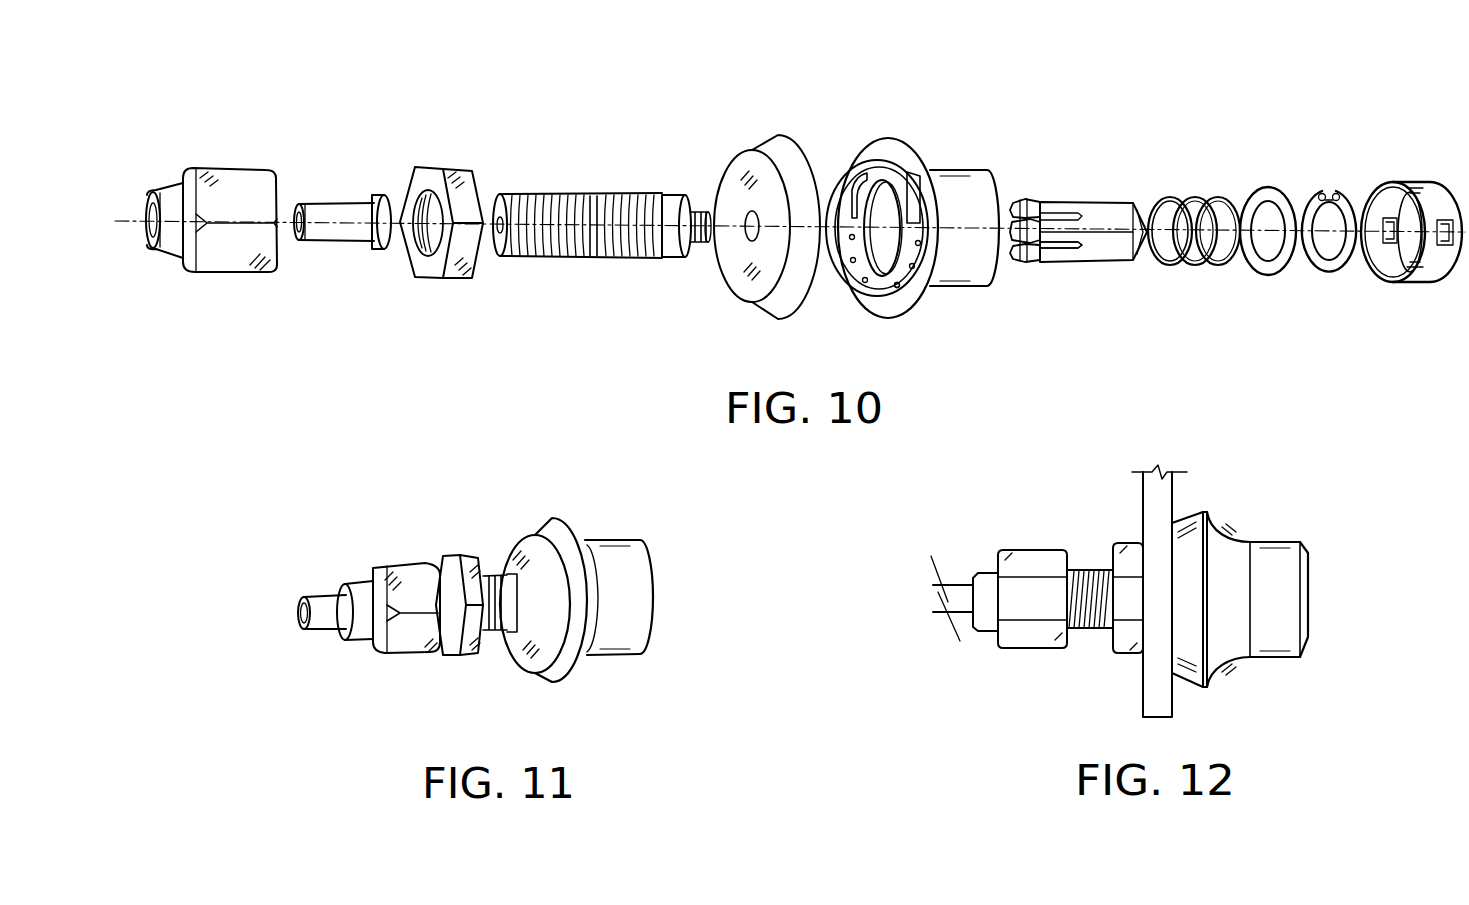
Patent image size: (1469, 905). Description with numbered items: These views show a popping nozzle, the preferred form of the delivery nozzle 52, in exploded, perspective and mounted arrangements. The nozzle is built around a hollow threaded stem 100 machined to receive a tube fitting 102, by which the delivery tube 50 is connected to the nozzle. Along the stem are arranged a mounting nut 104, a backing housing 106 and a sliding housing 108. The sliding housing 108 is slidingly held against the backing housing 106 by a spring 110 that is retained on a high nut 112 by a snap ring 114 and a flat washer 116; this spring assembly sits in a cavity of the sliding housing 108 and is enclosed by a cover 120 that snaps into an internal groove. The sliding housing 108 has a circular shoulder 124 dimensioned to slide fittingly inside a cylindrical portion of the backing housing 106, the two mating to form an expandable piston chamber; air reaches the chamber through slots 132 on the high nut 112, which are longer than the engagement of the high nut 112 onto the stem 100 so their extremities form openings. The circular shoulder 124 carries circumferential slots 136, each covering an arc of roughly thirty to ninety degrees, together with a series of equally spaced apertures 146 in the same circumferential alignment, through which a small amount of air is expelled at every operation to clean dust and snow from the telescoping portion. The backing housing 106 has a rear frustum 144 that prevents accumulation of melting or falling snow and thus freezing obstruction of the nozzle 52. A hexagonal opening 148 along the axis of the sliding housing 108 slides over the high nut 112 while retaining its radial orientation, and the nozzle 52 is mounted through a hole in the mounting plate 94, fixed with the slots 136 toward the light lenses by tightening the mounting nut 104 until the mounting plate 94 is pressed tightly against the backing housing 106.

In FIG. 10, the delivery tube 50 is at (337, 203).
In FIG. 11, the delivery tube 50 is at (310, 597).
In FIG. 12, the delivery nozzle 52 is at (1247, 679).
In FIG. 12, the mounting plate 94 is at (1173, 490).
In FIG. 10, the hollow threaded stem 100 is at (595, 193).
In FIG. 12, the hollow threaded stem 100 is at (1090, 628).
In FIG. 10, the tube fitting 102 is at (225, 168).
In FIG. 11, the tube fitting 102 is at (387, 567).
In FIG. 12, the tube fitting 102 is at (1030, 550).
In FIG. 10, the mounting nut 104 is at (443, 165).
In FIG. 11, the mounting nut 104 is at (450, 555).
In FIG. 12, the mounting nut 104 is at (1123, 547).
In FIG. 10, the backing housing 106 is at (737, 167).
In FIG. 11, the backing housing 106 is at (523, 540).
In FIG. 12, the backing housing 106 is at (1167, 547).
In FIG. 10, the sliding housing 108 is at (960, 167).
In FIG. 11, the sliding housing 108 is at (593, 540).
In FIG. 12, the sliding housing 108 is at (1225, 545).
In FIG. 10, the spring 110 is at (1200, 195).
In FIG. 10, the high nut 112 is at (1087, 203).
In FIG. 10, the snap ring 114 is at (1325, 190).
In FIG. 10, the flat washer 116 is at (1262, 188).
In FIG. 10, the cover 120 is at (1437, 180).
In FIG. 10, the circular shoulder 124 is at (890, 217).
In FIG. 10, the slots 132 is at (1057, 247).
In FIG. 10, the circumferential slots 136 is at (893, 170).
In FIG. 12, the rear frustum 144 is at (1190, 508).
In FIG. 10, the apertures 146 is at (898, 285).
In FIG. 10, the hexagonal opening 148 is at (857, 197).